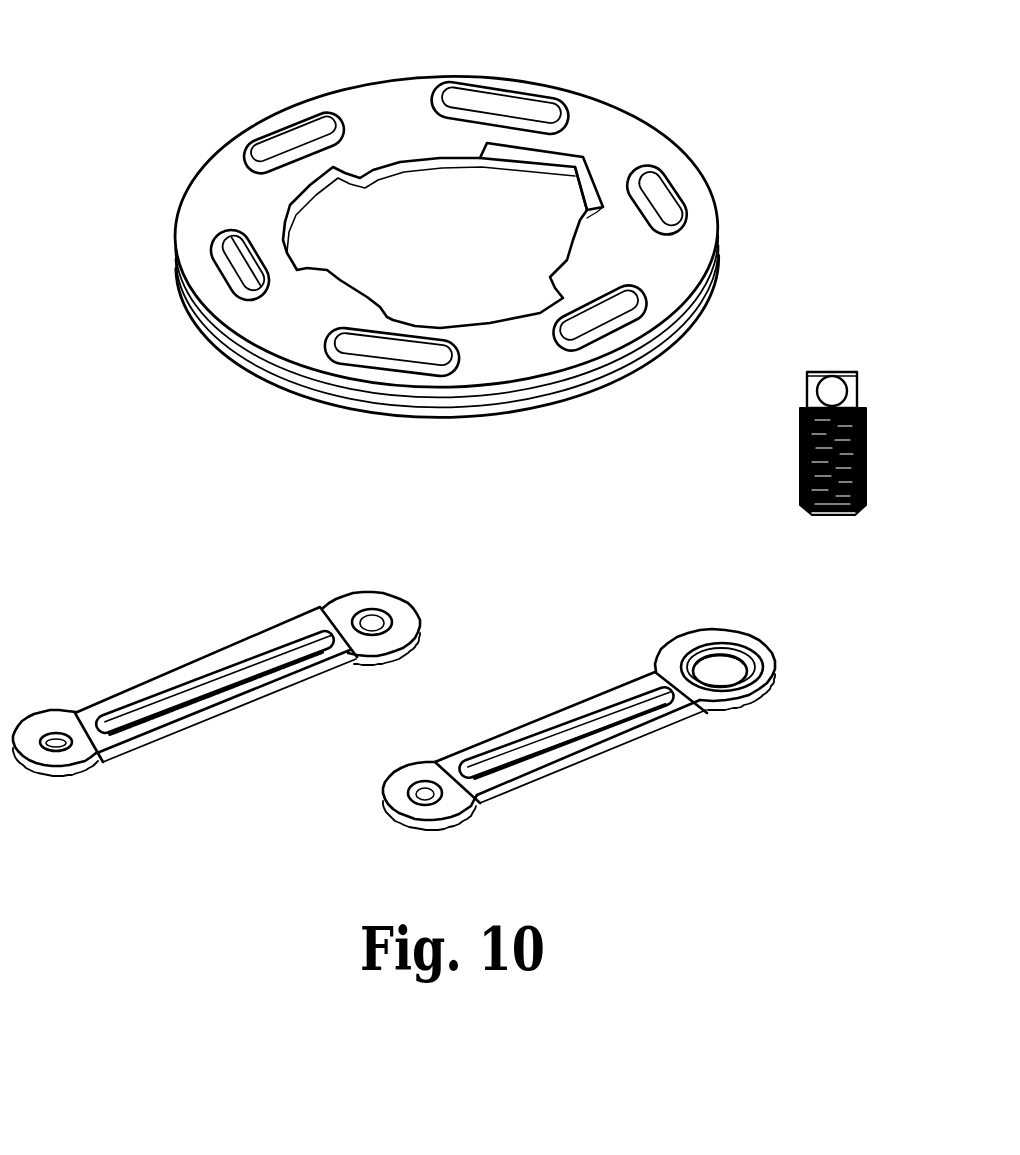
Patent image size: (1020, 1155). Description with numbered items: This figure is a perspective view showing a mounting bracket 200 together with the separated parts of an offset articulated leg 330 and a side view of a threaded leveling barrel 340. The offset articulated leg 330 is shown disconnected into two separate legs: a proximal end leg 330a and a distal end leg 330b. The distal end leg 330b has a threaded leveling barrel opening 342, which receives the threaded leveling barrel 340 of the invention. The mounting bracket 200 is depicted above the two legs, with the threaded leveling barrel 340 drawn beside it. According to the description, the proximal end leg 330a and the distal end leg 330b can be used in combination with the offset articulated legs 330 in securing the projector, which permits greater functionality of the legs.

The mounting bracket 200 is at (537, 82).
The threaded leveling barrel 340 is at (830, 369).
The offset articulated leg 330 is at (431, 696).
The proximal end leg 330a is at (202, 720).
The distal end leg 330b is at (616, 747).
The threaded leveling barrel opening 342 is at (727, 677).